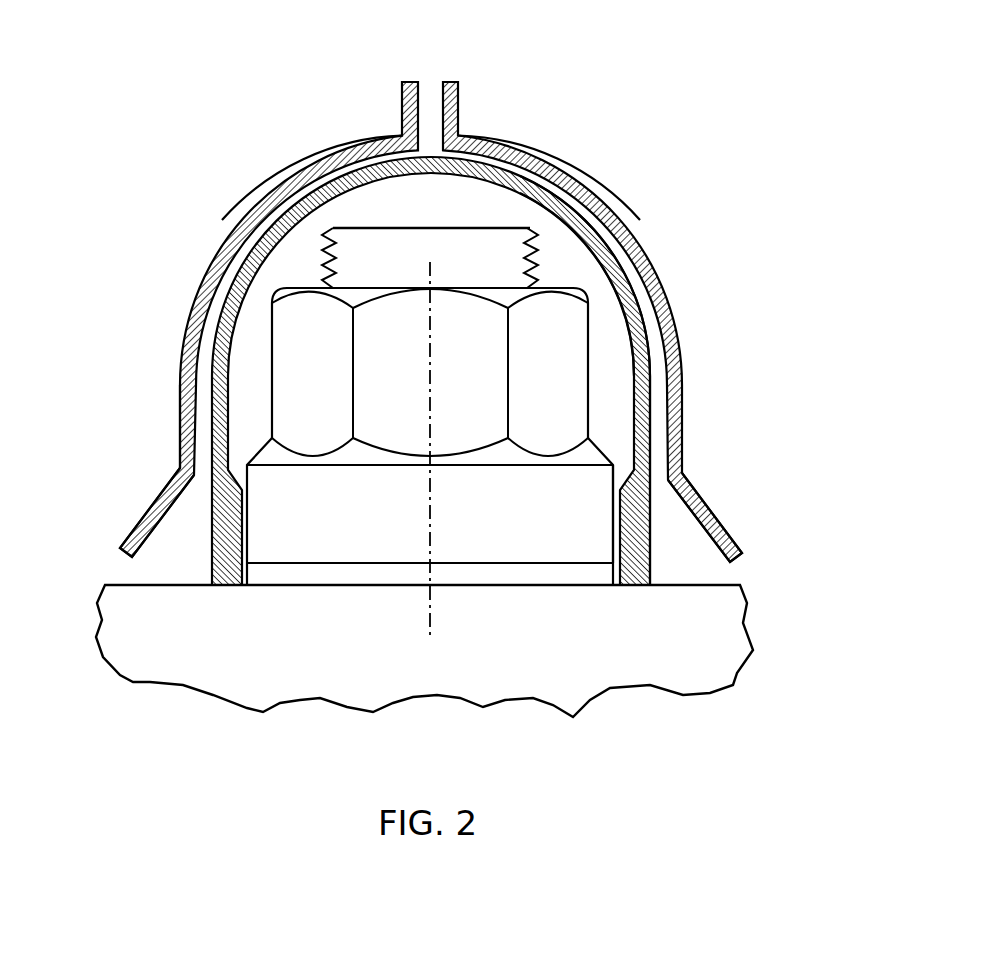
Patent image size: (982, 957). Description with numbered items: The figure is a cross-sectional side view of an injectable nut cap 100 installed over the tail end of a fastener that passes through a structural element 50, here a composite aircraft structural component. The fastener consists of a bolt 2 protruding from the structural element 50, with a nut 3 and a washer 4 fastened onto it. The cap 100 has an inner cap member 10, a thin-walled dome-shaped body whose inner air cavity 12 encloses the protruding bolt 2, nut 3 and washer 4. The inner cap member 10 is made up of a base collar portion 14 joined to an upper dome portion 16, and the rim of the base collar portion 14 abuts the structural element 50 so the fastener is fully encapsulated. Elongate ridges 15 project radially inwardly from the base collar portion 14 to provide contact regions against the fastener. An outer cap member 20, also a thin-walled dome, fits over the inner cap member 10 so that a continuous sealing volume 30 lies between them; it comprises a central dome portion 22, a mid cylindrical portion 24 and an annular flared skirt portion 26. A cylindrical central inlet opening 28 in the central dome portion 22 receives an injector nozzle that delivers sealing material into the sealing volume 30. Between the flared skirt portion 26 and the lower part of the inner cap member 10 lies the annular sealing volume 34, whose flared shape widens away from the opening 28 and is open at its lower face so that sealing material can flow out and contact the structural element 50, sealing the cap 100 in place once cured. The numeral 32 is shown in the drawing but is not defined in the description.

The injectable nut cap 100 is at (684, 90).
The bolt 2 is at (365, 263).
The nut 3 is at (357, 535).
The washer 4 is at (277, 573).
The inner cap member 10 is at (655, 388).
The inner air cavity 12 is at (449, 212).
The base collar portion 14 is at (650, 450).
The elongate ridges 15 is at (612, 540).
The upper dome portion 16 is at (540, 182).
The outer cap member 20 is at (676, 290).
The central dome portion 22 is at (268, 188).
The mid cylindrical portion 24 is at (178, 450).
The annular flared skirt portion 26 is at (148, 517).
The central inlet opening 28 is at (461, 92).
The sealing volume 30 is at (655, 340).
The inner cap inner surface 32 is at (583, 213).
The annular sealing volume 34 is at (688, 545).
The structural element 50 is at (720, 637).